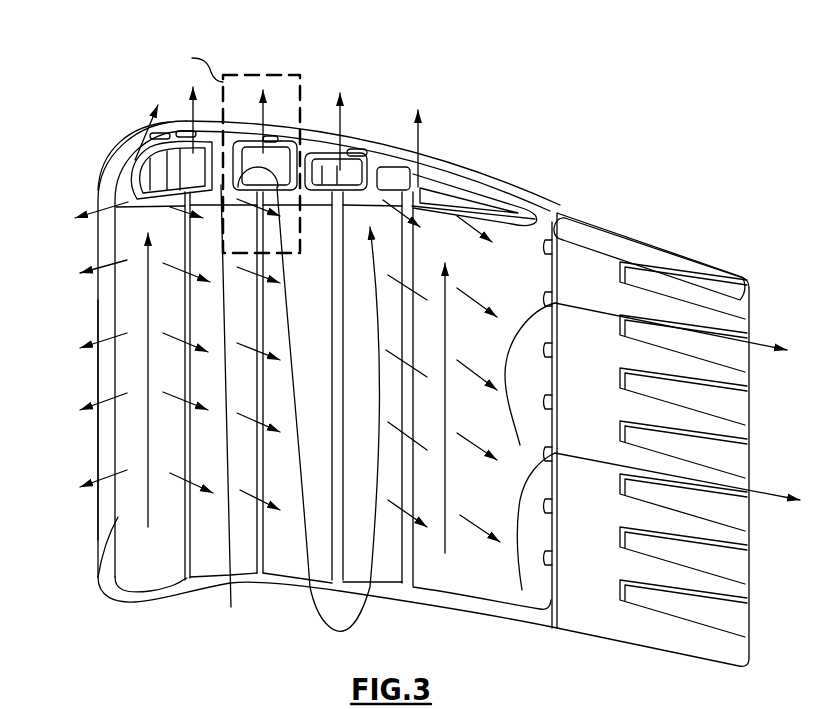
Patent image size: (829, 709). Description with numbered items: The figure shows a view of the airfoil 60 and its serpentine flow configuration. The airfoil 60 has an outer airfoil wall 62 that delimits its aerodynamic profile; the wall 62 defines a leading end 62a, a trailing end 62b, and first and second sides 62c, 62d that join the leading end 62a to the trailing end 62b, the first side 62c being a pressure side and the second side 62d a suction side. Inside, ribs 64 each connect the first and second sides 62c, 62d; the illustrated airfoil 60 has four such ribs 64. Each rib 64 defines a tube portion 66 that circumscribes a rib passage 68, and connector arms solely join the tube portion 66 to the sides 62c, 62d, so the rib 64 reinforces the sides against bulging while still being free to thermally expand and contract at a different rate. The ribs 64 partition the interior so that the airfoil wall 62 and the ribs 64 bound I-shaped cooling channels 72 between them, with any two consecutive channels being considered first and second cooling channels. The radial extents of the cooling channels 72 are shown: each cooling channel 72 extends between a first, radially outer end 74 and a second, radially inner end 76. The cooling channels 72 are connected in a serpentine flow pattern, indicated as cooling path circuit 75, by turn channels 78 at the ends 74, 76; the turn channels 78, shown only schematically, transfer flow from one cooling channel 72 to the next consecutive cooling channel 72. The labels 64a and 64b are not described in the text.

The airfoil 60 is at (414, 337).
The airfoil wall 62 is at (527, 195).
The leading end 62a is at (98, 450).
The trailing end 62b is at (740, 268).
The first side 62c is at (158, 205).
The second side 62d is at (473, 167).
The rib 64 is at (233, 170).
The first cooling passage 64a is at (253, 233).
The second cooling passage 64b is at (343, 290).
The tube portion 66 is at (347, 178).
The rib passage 68 is at (283, 141).
The cooling channel 72 is at (233, 130).
The first cooling channel radial end 74 is at (304, 146).
The cooling path circuit 75 is at (293, 277).
The second cooling channel radial end 76 is at (262, 573).
The turn channel 78 is at (350, 632).